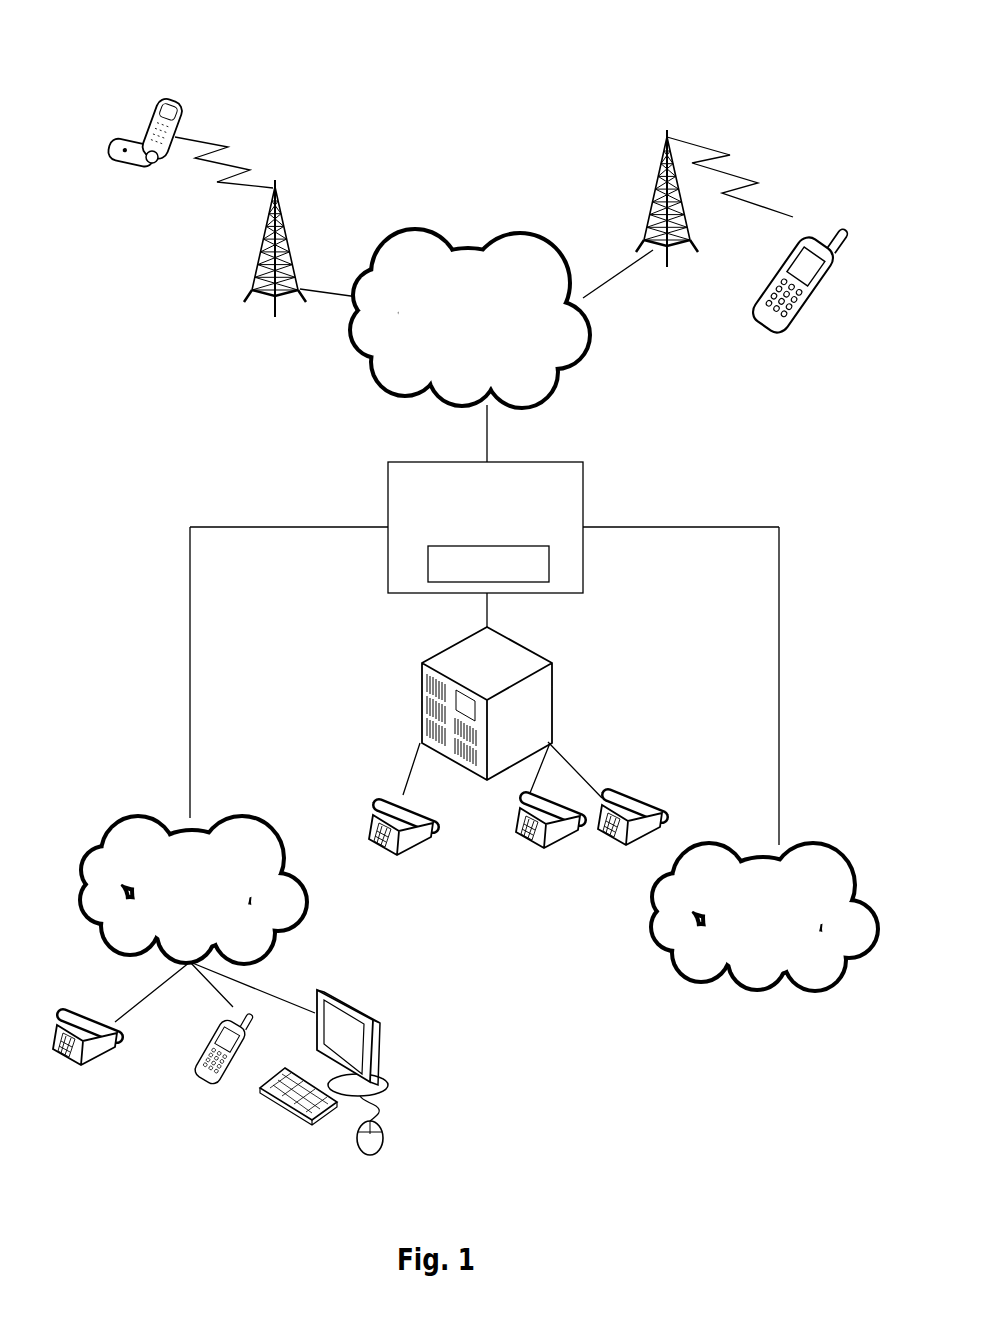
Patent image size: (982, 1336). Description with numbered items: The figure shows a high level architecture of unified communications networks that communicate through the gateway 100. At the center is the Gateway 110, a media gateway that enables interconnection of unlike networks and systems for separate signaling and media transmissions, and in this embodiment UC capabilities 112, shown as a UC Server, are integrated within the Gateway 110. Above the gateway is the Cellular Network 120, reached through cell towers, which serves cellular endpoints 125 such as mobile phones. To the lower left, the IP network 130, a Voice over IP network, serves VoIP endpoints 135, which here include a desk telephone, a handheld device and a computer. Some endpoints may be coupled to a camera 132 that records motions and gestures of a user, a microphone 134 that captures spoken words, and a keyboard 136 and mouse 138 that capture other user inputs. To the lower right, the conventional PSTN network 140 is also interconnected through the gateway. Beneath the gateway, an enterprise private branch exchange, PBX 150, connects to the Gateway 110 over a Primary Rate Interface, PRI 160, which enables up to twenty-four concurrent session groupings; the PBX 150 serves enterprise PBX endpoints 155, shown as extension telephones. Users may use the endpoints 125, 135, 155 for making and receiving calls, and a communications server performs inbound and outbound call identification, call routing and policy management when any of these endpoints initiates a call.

The gateway 100 is at (104, 70).
The gateway 110 is at (388, 493).
The UC capabilities 112 is at (428, 566).
The cellular network 120 is at (401, 253).
The cellular endpoints 125 is at (150, 162).
The IP network 130 is at (303, 882).
The camera 132 is at (230, 1038).
The microphone 134 is at (197, 1067).
The VoIP endpoints 135 is at (317, 1047).
The keyboard 136 is at (297, 1113).
The mouse 138 is at (383, 1140).
The PSTN network 140 is at (720, 978).
The private branch exchange 150 is at (608, 735).
The enterprise PBX endpoints 155 is at (627, 850).
The Primary Rate Interface 160 is at (538, 616).